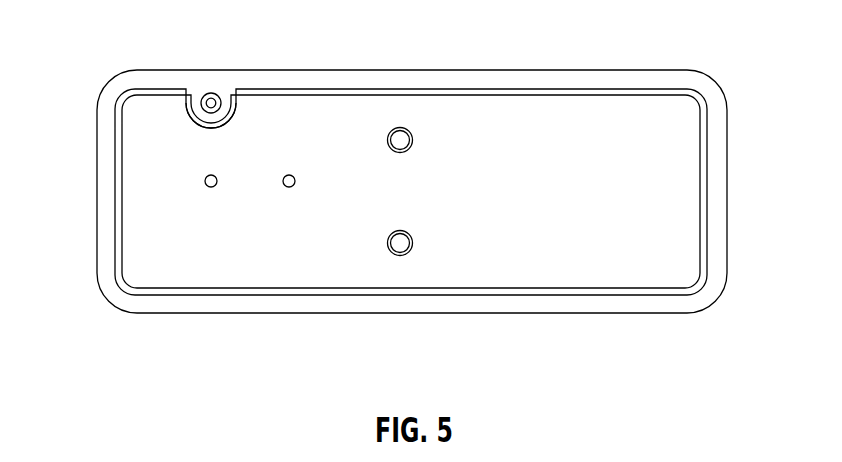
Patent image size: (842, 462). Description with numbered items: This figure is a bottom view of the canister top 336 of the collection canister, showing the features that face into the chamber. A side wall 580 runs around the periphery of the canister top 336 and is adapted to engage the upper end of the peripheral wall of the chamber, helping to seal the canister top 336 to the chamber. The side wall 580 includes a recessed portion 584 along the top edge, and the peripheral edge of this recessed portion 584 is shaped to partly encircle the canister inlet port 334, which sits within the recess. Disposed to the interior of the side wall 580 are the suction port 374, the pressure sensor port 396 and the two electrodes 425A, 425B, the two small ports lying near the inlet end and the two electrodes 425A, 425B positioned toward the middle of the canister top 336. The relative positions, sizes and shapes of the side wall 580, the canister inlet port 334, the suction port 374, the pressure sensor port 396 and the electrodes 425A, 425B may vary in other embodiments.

The canister top 336 is at (636, 40).
The side wall 580 is at (711, 202).
The recessed portion 584 is at (227, 131).
The canister inlet port 334 is at (205, 89).
The suction port 374 is at (208, 173).
The pressure sensor port 396 is at (288, 173).
The electrode 425A is at (416, 139).
The electrode 425B is at (416, 244).